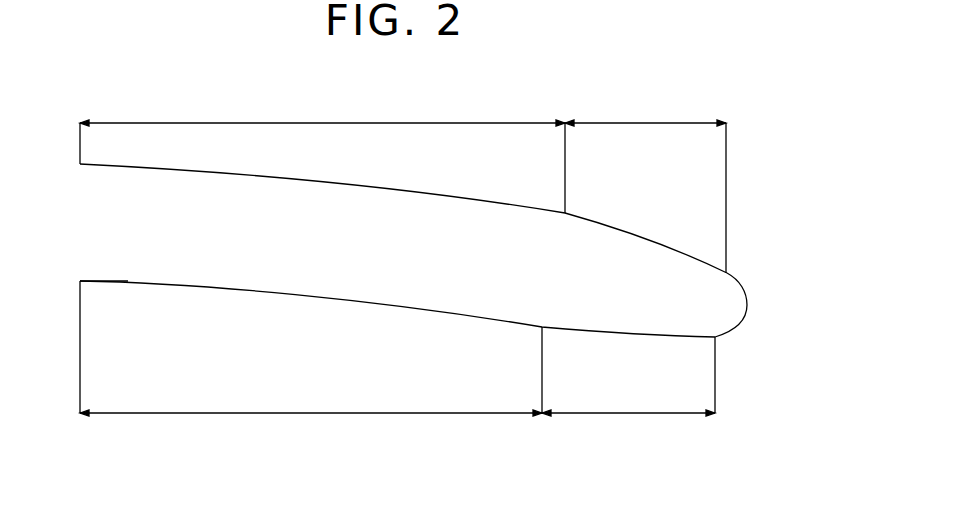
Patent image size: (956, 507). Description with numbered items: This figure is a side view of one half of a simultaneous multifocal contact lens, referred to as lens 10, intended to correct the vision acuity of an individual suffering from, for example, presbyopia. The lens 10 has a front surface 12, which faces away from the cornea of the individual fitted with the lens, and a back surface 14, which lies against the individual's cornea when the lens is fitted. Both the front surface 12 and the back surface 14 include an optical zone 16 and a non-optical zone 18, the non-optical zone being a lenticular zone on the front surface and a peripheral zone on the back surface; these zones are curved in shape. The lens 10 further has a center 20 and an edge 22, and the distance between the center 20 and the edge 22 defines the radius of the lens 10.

The lens 10 is at (438, 83).
The front surface 12 is at (483, 198).
The back surface 14 is at (445, 310).
The optical zone 16 is at (320, 123).
The non-optical zone 18 is at (647, 123).
The center 20 is at (128, 281).
The edge 22 is at (747, 307).